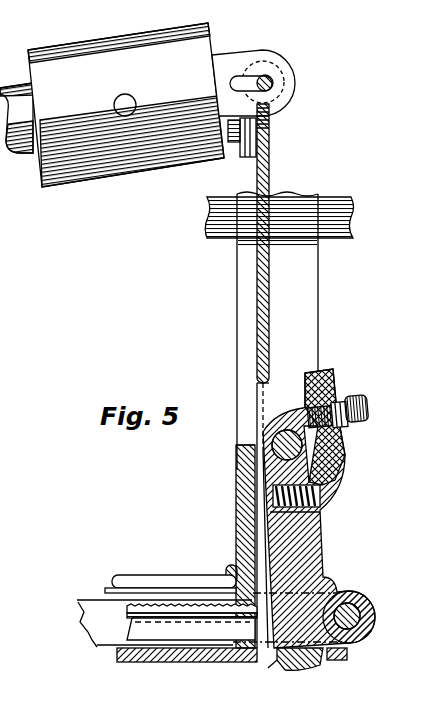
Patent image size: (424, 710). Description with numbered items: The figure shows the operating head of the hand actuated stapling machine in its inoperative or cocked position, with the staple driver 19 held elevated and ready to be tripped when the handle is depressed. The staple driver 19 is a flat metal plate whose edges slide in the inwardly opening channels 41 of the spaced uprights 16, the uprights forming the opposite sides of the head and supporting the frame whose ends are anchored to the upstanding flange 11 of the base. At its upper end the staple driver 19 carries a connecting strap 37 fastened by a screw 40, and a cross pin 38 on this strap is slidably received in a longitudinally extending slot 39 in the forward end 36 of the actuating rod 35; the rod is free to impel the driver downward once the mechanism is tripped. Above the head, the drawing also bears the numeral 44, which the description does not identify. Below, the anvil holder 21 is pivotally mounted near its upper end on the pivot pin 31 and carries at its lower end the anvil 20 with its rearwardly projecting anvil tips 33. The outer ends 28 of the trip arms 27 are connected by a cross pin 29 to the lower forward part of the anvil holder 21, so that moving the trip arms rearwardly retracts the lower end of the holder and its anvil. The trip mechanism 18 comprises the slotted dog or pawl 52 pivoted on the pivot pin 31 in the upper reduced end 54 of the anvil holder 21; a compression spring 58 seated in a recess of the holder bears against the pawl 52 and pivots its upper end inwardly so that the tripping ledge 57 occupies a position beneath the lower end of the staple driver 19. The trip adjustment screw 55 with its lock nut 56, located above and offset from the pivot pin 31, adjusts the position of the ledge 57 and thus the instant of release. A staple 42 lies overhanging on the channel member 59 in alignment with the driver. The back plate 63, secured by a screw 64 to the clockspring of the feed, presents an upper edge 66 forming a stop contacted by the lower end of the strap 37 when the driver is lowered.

The upstanding flange 11 is at (137, 575).
The uprights 16 is at (323, 306).
The trip mechanism 18 is at (336, 371).
The staple driver 19 is at (272, 152).
The anvil 20 is at (302, 670).
The anvil holder 21 is at (326, 560).
The trip arms 27 is at (90, 603).
The outer end of trip arms 28 is at (352, 584).
The cross pin 29 is at (352, 604).
The pivot pin 31 is at (292, 442).
The anvil tips 33 is at (270, 668).
The actuating rod 35 is at (22, 155).
The forward end of actuating rod 36 is at (262, 57).
The connecting strap 37 is at (240, 148).
The cross pin 38 is at (272, 80).
The slot 39 is at (237, 76).
The screw 40 is at (270, 130).
The channels 41 is at (256, 505).
The staple 42 is at (193, 604).
The cylinder 44 is at (157, 81).
The dog or pawl 52 is at (345, 467).
The upper reduced end of anvil holder 54 is at (290, 420).
The trip adjustment screw 55 is at (362, 400).
The lock nut 56 is at (338, 402).
The tripping ledge 57 is at (276, 377).
The compression spring 58 is at (321, 512).
The channel member 59 is at (142, 622).
The back plate 63 is at (236, 472).
The screw 64 is at (230, 568).
The upper edge of back plate 66 is at (247, 445).